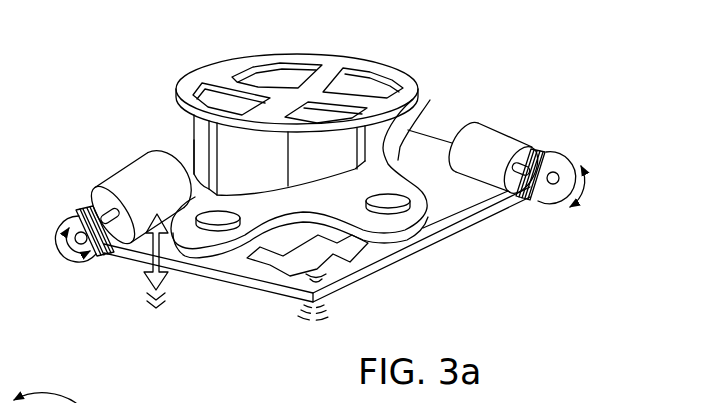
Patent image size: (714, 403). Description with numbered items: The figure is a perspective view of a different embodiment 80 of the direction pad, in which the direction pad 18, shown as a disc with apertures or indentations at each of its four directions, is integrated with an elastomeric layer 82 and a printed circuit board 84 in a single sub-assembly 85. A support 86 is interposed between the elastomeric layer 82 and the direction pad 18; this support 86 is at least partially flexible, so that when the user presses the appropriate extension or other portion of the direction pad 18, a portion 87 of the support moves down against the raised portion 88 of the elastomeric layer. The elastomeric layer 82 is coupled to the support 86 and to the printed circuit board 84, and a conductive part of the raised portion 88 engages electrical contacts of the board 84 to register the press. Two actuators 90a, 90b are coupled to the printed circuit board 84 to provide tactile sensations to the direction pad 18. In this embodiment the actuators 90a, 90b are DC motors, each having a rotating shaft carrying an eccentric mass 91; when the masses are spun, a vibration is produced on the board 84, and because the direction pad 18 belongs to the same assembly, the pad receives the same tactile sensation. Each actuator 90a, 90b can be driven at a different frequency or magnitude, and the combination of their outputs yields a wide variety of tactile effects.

The direction pad 18 is at (293, 58).
The embodiment of the direction pad 80 is at (213, 51).
The elastomeric layer 82 is at (407, 217).
The printed circuit board 84 is at (330, 278).
The sub-assembly 85 is at (437, 89).
The support 86 is at (189, 153).
The portion of the support 87 is at (233, 147).
The raised portion 88 is at (217, 219).
The actuator 90a is at (114, 175).
The actuator 90b is at (515, 132).
The eccentric mass 91 is at (91, 257).